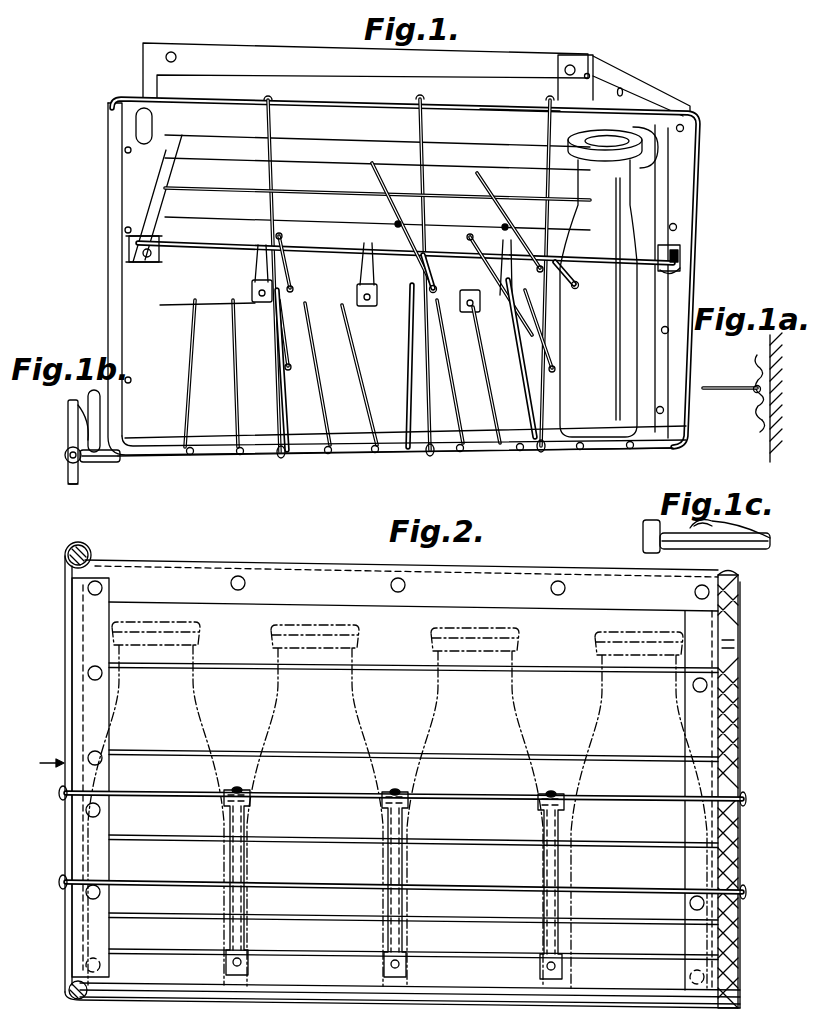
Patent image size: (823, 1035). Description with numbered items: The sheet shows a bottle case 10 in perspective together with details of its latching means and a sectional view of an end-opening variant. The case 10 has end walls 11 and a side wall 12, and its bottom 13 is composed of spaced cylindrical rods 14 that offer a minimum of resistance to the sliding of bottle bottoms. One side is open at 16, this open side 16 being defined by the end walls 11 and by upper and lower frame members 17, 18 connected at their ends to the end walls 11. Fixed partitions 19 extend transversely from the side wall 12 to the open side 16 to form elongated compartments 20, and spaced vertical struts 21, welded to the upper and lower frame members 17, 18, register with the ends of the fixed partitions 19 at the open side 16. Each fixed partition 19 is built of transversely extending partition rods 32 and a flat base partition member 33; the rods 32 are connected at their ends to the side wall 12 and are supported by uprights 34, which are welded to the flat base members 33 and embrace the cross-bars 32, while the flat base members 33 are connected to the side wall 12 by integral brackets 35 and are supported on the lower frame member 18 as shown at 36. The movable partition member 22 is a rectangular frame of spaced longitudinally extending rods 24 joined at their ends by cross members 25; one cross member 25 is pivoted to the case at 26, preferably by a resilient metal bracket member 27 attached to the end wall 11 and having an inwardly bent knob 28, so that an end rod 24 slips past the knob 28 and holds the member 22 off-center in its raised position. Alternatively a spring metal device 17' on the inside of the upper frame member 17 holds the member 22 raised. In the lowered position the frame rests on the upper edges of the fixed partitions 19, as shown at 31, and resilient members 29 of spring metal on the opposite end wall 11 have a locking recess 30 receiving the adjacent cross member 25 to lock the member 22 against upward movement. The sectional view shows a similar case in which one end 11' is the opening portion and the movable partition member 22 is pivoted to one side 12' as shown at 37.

In FIG. 1, the rectangular case 10 is at (699, 292).
In FIG. 2, the rectangular case 10 is at (193, 580).
In FIG. 1, the end walls 11 is at (405, 245).
In FIG. 1A, the end walls 11 is at (756, 397).
In FIG. 1C, the end walls 11 is at (634, 530).
In FIG. 2, the end walls 11 is at (732, 790).
In FIG. 2, the opening end 11' is at (62, 777).
In FIG. 1, the side wall 12 is at (366, 127).
In FIG. 2, the side 12' is at (401, 583).
In FIG. 1, the bottom 13 is at (232, 432).
In FIG. 1, the cylindrical rods 14 is at (300, 333).
In FIG. 2, the cylindrical rods 14 is at (340, 988).
In FIG. 1, the open side 16 is at (378, 127).
In FIG. 1, the upper frame member 17 is at (508, 96).
In FIG. 1C, the upper frame member 17 is at (729, 554).
In FIG. 1C, the spring metal device 17' is at (746, 536).
In FIG. 1, the lower frame member 18 is at (482, 453).
In FIG. 1, the fixed partitions 19 is at (396, 223).
In FIG. 2, the fixed partitions 19 is at (230, 827).
In FIG. 1, the elongated compartments 20 is at (176, 428).
In FIG. 1, the vertical struts 21 is at (272, 124).
In FIG. 1, the movable partition member 22 is at (538, 168).
In FIG. 1A, the movable partition member 22 is at (731, 387).
In FIG. 2, the movable partition member 22 is at (402, 791).
In FIG. 1, the longitudinally extending rods 24 is at (347, 163).
In FIG. 1B, the longitudinally extending rods 24 is at (88, 395).
In FIG. 1, the cross members 25 is at (138, 242).
In FIG. 1A, the cross members 25 is at (752, 392).
In FIG. 1B, the cross members 25 is at (100, 463).
In FIG. 1, the pivot 26 is at (168, 160).
In FIG. 1B, the pivot 26 is at (66, 457).
In FIG. 1, the resilient metal bracket member 27 is at (130, 263).
In FIG. 1B, the resilient metal bracket member 27 is at (70, 480).
In FIG. 1, the knob 28 is at (148, 250).
In FIG. 1B, the knob 28 is at (70, 430).
In FIG. 1, the resilient members 29 is at (683, 252).
In FIG. 1A, the resilient members 29 is at (757, 362).
In FIG. 1, the locking recess 30 is at (683, 266).
In FIG. 1A, the locking recess 30 is at (757, 411).
In FIG. 1, the upper edges of the fixed partitions 31 is at (288, 246).
In FIG. 1, the transversely extending partition rods 32 is at (385, 171).
In FIG. 2, the transversely extending partition rods 32 is at (455, 805).
In FIG. 1, the flat base partition members 33 is at (278, 398).
In FIG. 2, the flat base partition members 33 is at (340, 957).
In FIG. 1, the uprights 34 is at (266, 275).
In FIG. 2, the uprights 34 is at (240, 872).
In FIG. 1, the integral brackets 35 is at (264, 302).
In FIG. 1, the support on lower frame member 36 is at (281, 457).
In FIG. 2, the pivot 37 is at (60, 789).